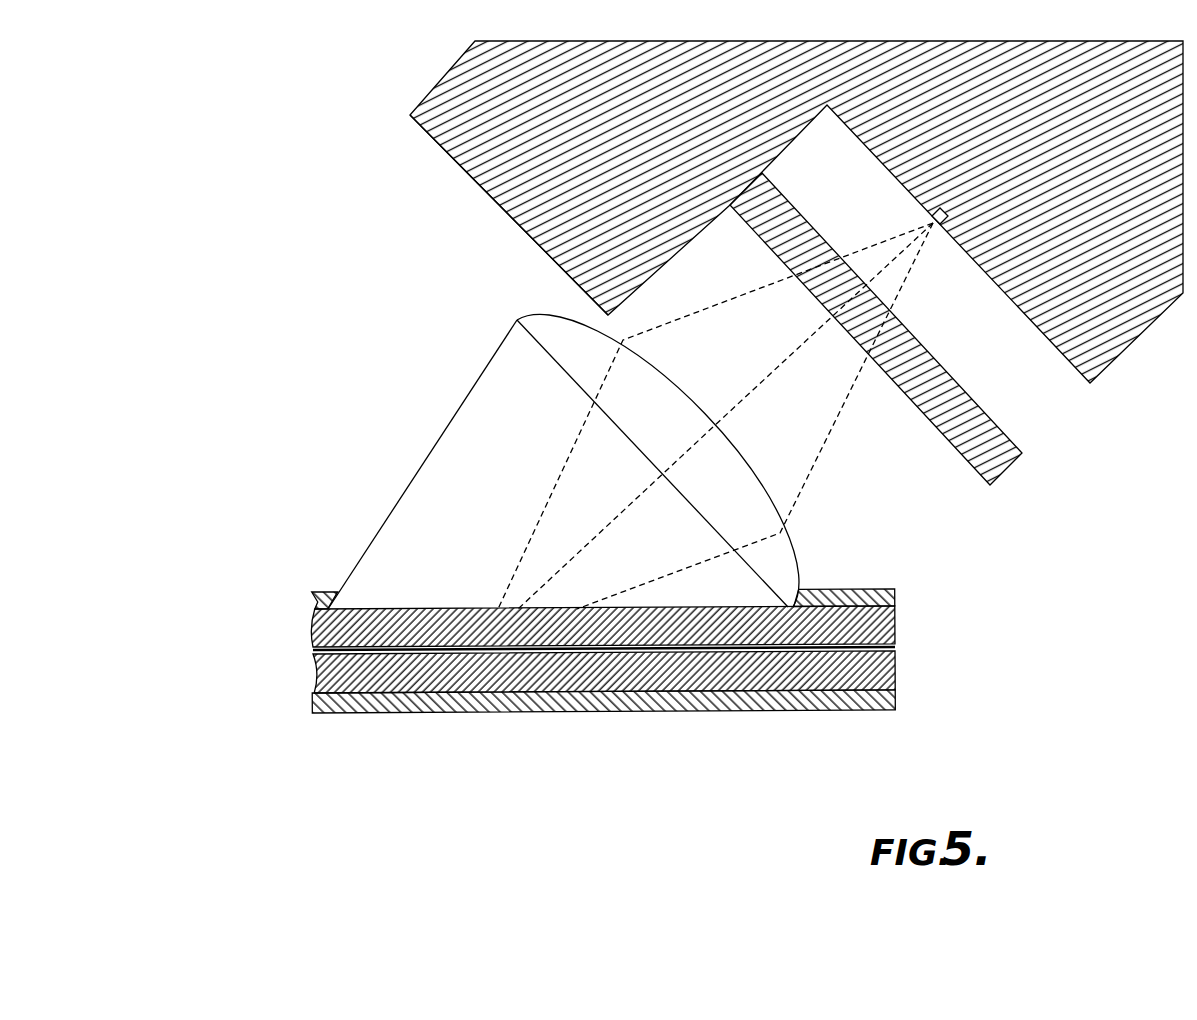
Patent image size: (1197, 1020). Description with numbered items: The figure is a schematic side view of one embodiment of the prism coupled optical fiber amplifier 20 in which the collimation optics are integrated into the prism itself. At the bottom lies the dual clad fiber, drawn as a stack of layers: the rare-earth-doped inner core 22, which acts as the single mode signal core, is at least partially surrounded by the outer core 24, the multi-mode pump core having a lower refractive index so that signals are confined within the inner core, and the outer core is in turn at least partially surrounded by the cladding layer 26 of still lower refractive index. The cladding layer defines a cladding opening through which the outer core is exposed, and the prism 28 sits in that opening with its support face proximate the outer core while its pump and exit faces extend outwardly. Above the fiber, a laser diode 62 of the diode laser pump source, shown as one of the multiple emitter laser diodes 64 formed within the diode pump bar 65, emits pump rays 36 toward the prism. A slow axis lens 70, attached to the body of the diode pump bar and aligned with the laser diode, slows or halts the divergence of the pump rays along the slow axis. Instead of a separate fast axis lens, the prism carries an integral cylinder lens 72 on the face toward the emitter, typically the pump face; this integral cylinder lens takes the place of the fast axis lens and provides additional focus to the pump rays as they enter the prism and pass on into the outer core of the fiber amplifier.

The prism coupled optical fiber amplifier 20 is at (548, 676).
The inner core 22 is at (613, 650).
The outer core 24 is at (517, 677).
The cladding layer 26 is at (425, 708).
The prism 28 is at (442, 430).
The pump rays 36 is at (807, 478).
The laser diode 62 is at (938, 227).
The multiple emitter laser diodes 64 is at (367, 98).
The diode pump bar 65 is at (487, 193).
The slow axis lens 70 is at (1008, 470).
The integral cylinder lens 72 is at (550, 312).